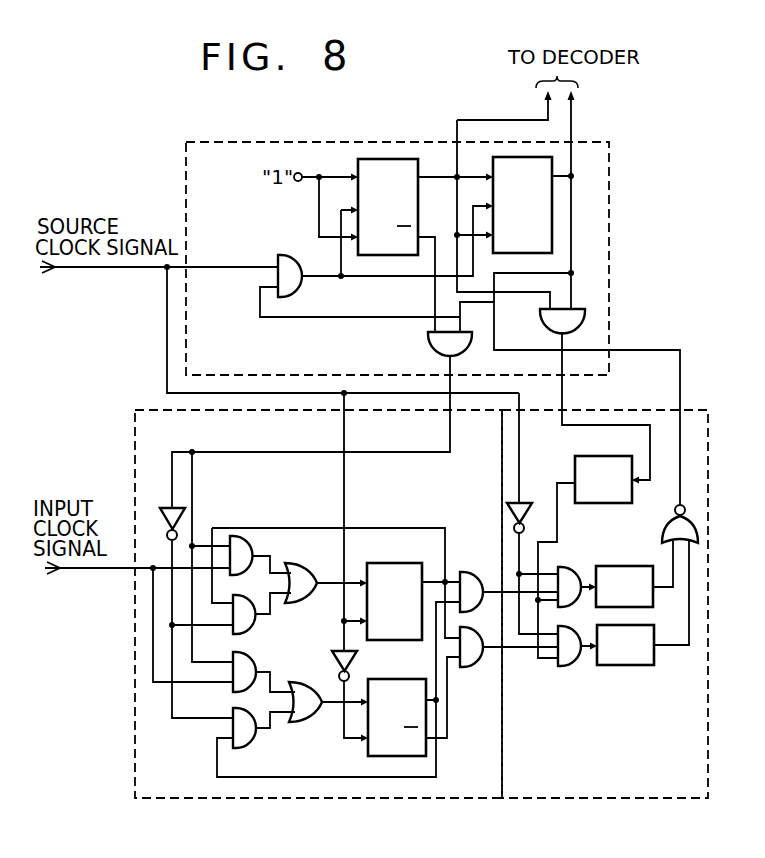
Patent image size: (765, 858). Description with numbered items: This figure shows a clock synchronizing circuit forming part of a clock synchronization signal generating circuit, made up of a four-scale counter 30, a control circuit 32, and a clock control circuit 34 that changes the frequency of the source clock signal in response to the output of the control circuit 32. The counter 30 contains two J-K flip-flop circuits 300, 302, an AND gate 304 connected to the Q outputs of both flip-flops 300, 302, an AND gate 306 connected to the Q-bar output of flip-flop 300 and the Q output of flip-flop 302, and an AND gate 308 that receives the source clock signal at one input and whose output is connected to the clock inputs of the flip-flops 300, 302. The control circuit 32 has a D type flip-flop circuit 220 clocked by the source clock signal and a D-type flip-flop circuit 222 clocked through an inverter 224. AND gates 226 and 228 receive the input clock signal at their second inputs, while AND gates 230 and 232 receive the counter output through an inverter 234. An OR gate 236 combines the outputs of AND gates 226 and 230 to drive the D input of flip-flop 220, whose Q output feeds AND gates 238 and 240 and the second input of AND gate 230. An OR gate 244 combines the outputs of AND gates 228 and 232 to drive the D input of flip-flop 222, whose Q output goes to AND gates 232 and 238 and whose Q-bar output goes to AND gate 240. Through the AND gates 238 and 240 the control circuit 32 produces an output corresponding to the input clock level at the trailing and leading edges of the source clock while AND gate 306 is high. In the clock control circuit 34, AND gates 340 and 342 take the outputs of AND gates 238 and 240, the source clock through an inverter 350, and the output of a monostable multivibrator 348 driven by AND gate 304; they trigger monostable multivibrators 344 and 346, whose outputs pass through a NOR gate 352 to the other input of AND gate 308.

The 4-scale counter 30 is at (609, 258).
The control circuit 32 is at (281, 799).
The clock control circuit 34 is at (548, 799).
The J-K flip-flop circuit 300 is at (391, 158).
The J-K flip-flop circuit 302 is at (548, 208).
The AND gate 304 is at (548, 318).
The AND gate 306 is at (444, 344).
The AND gate 308 is at (290, 280).
The D type flip-flop circuit 220 is at (392, 563).
The D-type flip-flop circuit 222 is at (368, 749).
The inverter 224 is at (360, 666).
The AND gate 226 is at (252, 556).
The AND gate 228 is at (248, 668).
The AND gate 230 is at (244, 633).
The AND gate 232 is at (244, 745).
The inverter 234 is at (180, 525).
The OR gate 236 is at (293, 577).
The AND gate 238 is at (460, 572).
The AND gate 240 is at (471, 667).
The OR gate 244 is at (300, 718).
The AND gate 340 is at (583, 553).
The AND gate 342 is at (570, 673).
The monostable multivibrator 344 is at (631, 566).
The monostable multivibrator 346 is at (630, 666).
The monostable multivibrator 348 is at (600, 456).
The inverter 350 is at (521, 502).
The NOR gate 352 is at (665, 538).